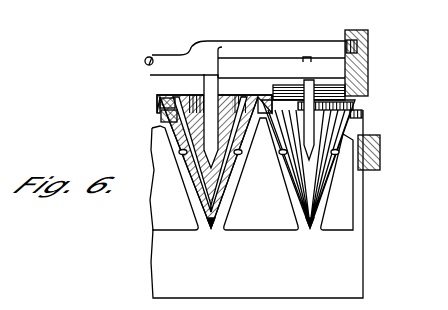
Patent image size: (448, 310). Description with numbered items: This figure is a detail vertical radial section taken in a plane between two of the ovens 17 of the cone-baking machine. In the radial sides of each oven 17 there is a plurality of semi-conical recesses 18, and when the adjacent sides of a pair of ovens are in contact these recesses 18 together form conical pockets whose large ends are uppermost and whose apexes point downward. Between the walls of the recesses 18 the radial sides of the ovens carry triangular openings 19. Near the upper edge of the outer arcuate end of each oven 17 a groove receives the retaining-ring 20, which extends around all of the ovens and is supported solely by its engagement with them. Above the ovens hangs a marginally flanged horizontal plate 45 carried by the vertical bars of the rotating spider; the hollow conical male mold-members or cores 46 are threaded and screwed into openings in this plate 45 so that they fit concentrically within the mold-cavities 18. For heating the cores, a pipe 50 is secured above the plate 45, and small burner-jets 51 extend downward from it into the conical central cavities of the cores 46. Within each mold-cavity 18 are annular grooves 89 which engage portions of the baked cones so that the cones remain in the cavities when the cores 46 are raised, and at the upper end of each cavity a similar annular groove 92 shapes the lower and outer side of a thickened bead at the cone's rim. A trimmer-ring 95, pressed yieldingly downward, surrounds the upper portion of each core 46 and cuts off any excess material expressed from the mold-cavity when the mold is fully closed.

The oven 17 is at (256, 204).
The semi-conical recess 18 is at (210, 231).
The triangular opening 19 is at (252, 174).
The retaining-ring 20 is at (381, 158).
The horizontal plate 45 is at (370, 91).
The male mold-member 46 is at (305, 173).
The pipe 50 is at (268, 44).
The burner-jet 51 is at (212, 88).
The annular groove 89 is at (182, 155).
The annular groove 92 is at (163, 123).
The trimmer-ring 95 is at (160, 104).